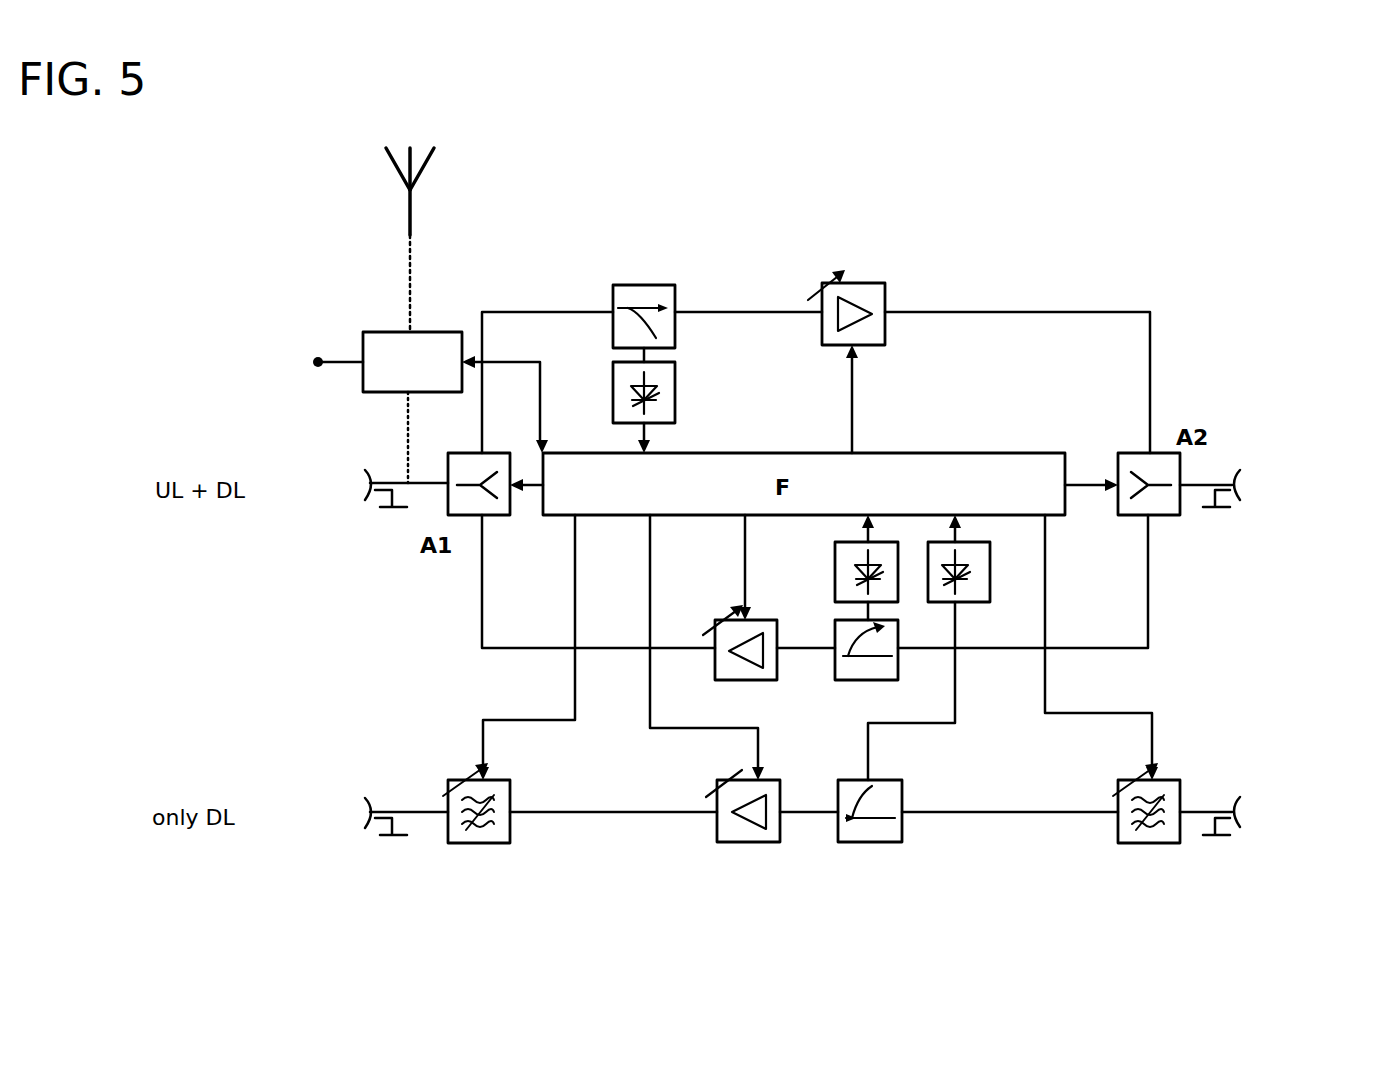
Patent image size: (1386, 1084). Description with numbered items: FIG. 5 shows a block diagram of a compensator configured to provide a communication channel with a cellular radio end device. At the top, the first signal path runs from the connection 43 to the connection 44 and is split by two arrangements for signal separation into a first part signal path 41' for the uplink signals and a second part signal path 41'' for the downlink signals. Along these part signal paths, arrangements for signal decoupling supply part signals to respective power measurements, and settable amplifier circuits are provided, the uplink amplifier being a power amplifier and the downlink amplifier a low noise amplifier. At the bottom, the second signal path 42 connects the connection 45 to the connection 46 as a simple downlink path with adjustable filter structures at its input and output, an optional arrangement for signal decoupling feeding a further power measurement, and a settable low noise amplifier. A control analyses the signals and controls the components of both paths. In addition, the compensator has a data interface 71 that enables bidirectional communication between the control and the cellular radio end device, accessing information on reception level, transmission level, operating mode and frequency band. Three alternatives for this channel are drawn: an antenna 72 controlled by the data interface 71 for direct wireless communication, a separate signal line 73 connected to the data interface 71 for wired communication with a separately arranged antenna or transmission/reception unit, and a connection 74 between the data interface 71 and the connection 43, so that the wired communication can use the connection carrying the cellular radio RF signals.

The antenna 72 is at (436, 185).
The data interface 71 is at (372, 338).
The separate signal line 73 is at (290, 372).
The connection 74 is at (398, 428).
The connection 43 is at (338, 492).
The connection 44 is at (1302, 487).
The connection 45 is at (335, 821).
The connection 46 is at (1302, 817).
The first part signal path 41' is at (806, 347).
The second part signal path 41'' is at (854, 616).
The second signal path 42 is at (1003, 818).